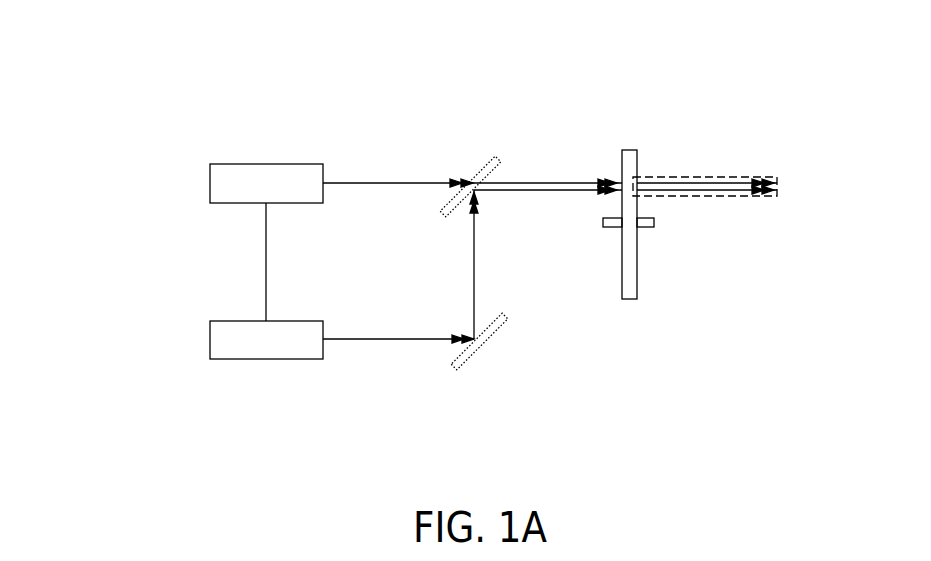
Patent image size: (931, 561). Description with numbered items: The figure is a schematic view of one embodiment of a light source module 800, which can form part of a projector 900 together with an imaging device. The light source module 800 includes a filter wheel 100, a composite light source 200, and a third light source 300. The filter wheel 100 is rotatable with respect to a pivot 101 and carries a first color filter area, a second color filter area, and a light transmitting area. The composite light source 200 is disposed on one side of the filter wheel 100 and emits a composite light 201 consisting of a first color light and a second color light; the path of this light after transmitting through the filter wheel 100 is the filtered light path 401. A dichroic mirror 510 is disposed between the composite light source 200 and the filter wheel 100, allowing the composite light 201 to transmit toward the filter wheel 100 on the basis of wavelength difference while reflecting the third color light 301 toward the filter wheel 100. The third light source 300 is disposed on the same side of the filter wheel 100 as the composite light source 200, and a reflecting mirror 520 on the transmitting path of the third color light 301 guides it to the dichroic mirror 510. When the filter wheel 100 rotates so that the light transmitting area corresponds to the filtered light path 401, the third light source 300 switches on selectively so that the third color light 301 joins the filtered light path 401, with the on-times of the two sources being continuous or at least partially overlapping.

The projector 900 is at (140, 30).
The light source module 800 is at (270, 107).
The filter wheel 100 is at (620, 158).
The pivot 101 is at (657, 222).
The composite light source 200 is at (223, 180).
The composite light 201 is at (398, 169).
The third light source 300 is at (222, 338).
The third color light 301 is at (400, 267).
The filtered light path 401 is at (735, 197).
The dichroic mirror 510 is at (438, 215).
The reflecting mirror 520 is at (450, 370).